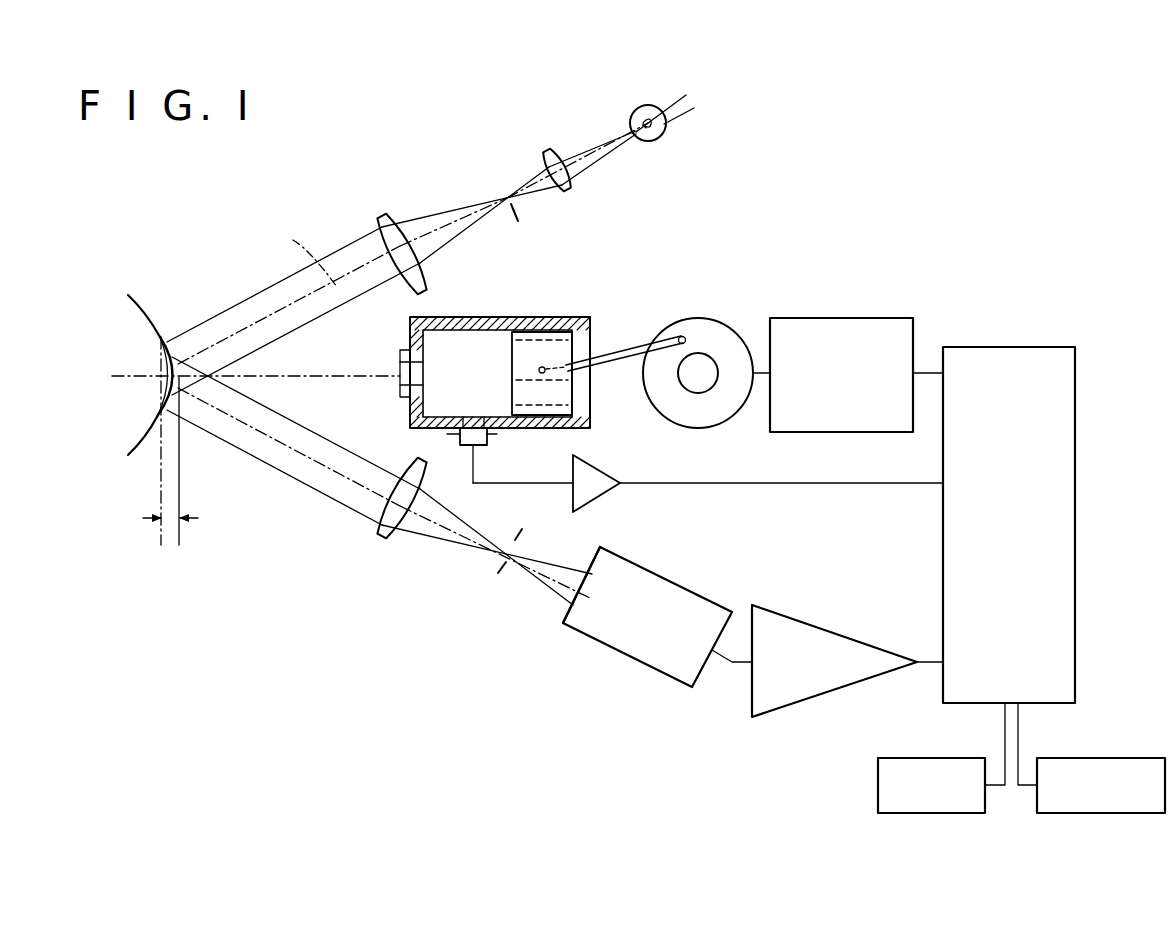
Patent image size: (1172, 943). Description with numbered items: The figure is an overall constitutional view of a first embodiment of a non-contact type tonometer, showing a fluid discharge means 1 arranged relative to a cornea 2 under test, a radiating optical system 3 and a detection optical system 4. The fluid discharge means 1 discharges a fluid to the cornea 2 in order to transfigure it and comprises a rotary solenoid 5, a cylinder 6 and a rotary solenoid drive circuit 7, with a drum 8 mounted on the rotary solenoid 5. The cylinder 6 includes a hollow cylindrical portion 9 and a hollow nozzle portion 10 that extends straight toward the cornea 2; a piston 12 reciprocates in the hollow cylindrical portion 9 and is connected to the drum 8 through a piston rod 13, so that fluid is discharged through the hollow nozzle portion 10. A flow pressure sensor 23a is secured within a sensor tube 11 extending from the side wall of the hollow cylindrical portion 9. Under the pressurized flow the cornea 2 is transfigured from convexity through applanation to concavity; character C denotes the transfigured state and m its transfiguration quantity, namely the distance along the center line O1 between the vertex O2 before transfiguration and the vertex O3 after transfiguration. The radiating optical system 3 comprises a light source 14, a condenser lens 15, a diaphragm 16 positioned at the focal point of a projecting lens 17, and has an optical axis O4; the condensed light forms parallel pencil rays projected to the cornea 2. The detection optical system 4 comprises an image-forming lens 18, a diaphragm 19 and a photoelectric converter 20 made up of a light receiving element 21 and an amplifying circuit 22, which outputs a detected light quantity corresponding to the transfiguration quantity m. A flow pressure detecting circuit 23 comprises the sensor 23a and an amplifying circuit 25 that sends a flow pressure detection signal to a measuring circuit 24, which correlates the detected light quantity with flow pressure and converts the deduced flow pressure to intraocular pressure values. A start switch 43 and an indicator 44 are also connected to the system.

The fluid discharge means 1 is at (619, 300).
The cornea 2 is at (160, 337).
The radiating optical system 3 is at (474, 196).
The detection optical system 4 is at (518, 582).
The rotary solenoid 5 is at (695, 355).
The cylinder 6 is at (538, 318).
The rotary solenoid drive circuit 7 is at (885, 318).
The drum 8 is at (742, 394).
The hollow cylindrical portion 9 is at (502, 318).
The hollow nozzle portion 10 is at (400, 360).
The sensor tube 11 is at (488, 432).
The piston 12 is at (577, 426).
The piston rod 13 is at (622, 362).
The light source 14 is at (634, 117).
The condenser lens 15 is at (553, 150).
The diaphragm 16 is at (503, 190).
The projecting lens 17 is at (394, 216).
The image-forming lens 18 is at (400, 528).
The diaphragm 19 is at (503, 565).
The photoelectric converter 20 is at (600, 648).
The light receiving element 21 is at (563, 622).
The amplifying circuit 22 is at (752, 692).
The flow pressure detecting circuit 23 is at (552, 487).
The flow pressure sensor 23a is at (476, 486).
The measuring circuit 24 is at (1045, 347).
The amplifying circuit 25 is at (618, 492).
The start switch 43 is at (945, 758).
The indicator 44 is at (1140, 758).
The center line O1 is at (116, 378).
The vertex of cornea before transfiguration O2 is at (168, 382).
The vertex of cornea after transfiguration O3 is at (155, 373).
The optical axis O4 is at (310, 251).
The transfigured state of cornea C is at (165, 420).
The transfiguration quantity m is at (172, 521).